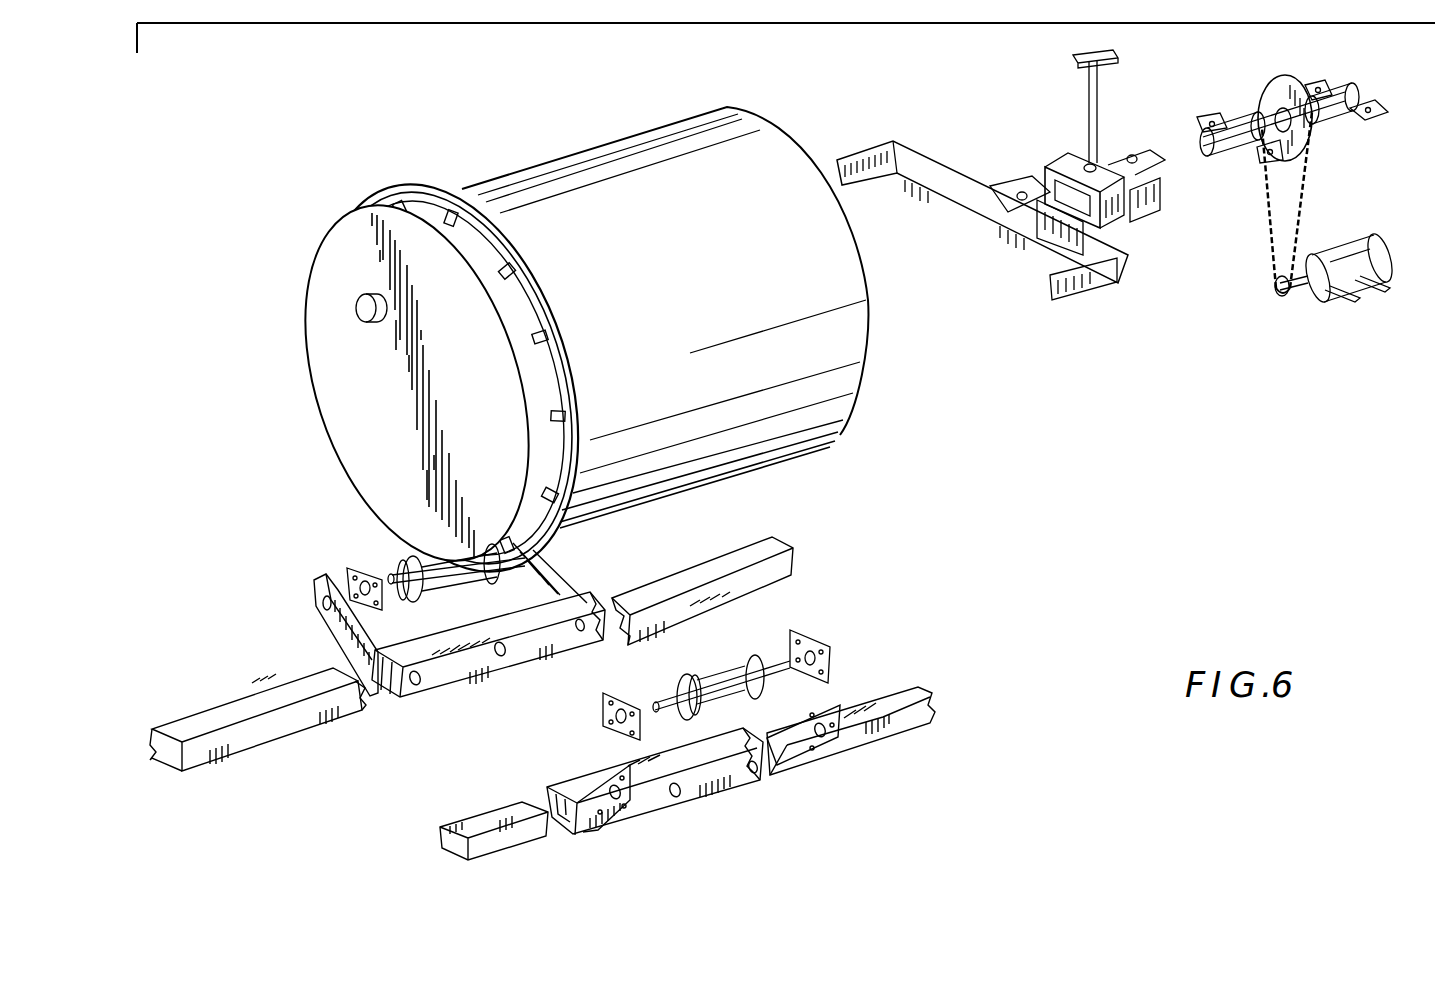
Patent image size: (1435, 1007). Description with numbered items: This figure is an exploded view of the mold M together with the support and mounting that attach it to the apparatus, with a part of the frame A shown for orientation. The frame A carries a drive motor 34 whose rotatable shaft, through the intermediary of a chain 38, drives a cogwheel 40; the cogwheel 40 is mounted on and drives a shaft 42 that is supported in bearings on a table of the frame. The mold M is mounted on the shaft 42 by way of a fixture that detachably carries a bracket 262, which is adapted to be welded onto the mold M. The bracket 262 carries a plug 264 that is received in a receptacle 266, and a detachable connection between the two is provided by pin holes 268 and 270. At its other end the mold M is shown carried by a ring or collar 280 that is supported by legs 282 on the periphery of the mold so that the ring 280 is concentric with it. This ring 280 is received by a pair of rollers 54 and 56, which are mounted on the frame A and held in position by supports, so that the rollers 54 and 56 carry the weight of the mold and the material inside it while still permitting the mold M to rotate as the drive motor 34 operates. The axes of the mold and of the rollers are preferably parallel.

The mold M is at (855, 410).
The ring or collar 280 is at (576, 392).
The legs 282 is at (553, 330).
The roller 54 is at (440, 577).
The roller 56 is at (742, 672).
The frame A is at (240, 700).
The bracket 262 is at (1040, 233).
The plug 264 is at (1080, 232).
The receptacle 266 is at (1130, 215).
The pin hole 268 is at (1093, 165).
The pin hole 270 is at (1022, 190).
The shaft 42 is at (1204, 150).
The cogwheel 40 is at (1315, 140).
The chain 38 is at (1262, 200).
The motor 34 is at (1350, 272).